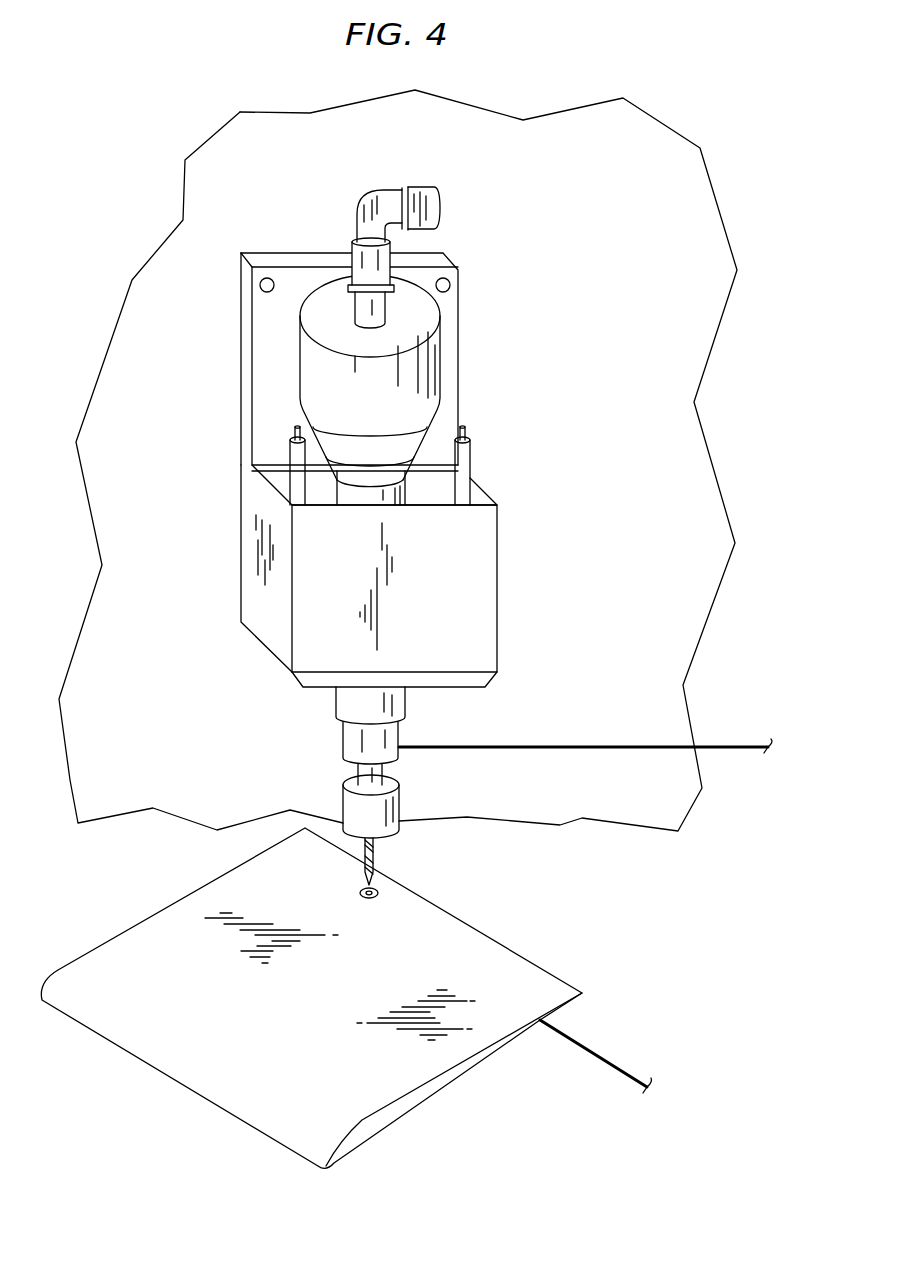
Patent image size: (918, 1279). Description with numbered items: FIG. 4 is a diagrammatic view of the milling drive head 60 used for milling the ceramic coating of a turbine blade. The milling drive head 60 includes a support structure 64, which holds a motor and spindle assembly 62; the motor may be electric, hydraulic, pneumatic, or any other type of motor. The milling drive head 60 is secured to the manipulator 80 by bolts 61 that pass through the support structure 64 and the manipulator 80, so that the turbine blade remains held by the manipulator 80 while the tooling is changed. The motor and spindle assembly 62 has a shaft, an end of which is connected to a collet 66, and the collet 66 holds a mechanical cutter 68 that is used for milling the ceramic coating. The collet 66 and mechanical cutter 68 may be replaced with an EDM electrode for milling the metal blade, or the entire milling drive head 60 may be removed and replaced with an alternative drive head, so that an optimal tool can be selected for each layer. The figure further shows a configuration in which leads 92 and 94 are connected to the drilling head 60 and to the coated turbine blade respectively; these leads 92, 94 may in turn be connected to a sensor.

The milling drive head 60 is at (158, 200).
The manipulator 80 is at (720, 215).
The bolts 61 is at (452, 287).
The motor and spindle assembly 62 is at (300, 360).
The support structure 64 is at (242, 507).
The collet 66 is at (400, 807).
The mechanical cutter 68 is at (368, 860).
The lead 92 is at (586, 747).
The lead 94 is at (603, 1057).